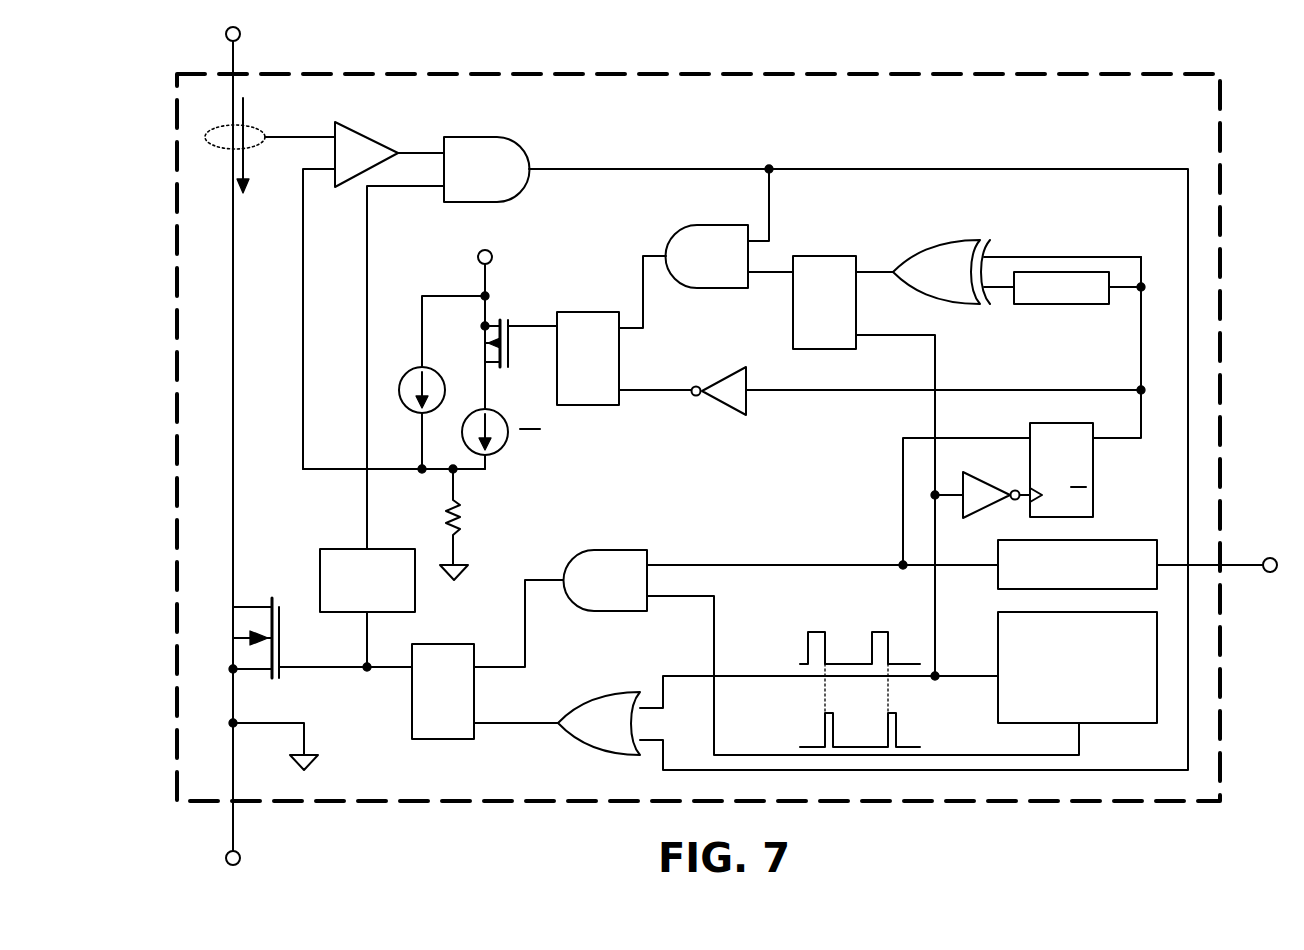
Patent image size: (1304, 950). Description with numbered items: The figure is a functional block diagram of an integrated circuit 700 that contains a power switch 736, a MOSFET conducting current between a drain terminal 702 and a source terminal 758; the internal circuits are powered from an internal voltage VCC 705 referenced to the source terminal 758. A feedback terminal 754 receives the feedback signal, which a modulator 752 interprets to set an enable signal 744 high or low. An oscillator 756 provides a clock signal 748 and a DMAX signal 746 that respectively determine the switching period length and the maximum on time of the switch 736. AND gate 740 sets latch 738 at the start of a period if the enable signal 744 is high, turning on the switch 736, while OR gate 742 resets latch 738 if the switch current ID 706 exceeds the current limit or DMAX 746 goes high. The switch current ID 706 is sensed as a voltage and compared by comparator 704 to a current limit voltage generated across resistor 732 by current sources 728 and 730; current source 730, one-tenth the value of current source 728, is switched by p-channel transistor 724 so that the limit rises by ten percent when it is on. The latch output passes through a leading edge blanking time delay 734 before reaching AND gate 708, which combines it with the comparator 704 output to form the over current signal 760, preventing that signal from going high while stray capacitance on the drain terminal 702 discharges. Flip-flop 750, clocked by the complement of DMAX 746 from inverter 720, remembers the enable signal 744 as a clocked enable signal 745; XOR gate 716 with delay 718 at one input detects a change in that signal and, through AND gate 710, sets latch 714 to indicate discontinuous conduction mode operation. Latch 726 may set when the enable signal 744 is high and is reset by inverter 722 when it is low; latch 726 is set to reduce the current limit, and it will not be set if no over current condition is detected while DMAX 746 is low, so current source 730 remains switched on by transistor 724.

The integrated circuit 700 is at (800, 63).
The drain terminal 702 is at (226, 41).
The comparator 704 is at (371, 131).
The internal voltage VCC 705 is at (478, 252).
The switch current ID 706 is at (258, 177).
The AND gate 708 is at (446, 404).
The AND gate 710 is at (729, 228).
The latch 714 is at (823, 252).
The XOR gate 716 is at (1017, 272).
The delay 718 is at (1046, 306).
The inverter 720 is at (990, 513).
The inverter 722 is at (725, 410).
The p-channel transistor 724 is at (498, 313).
The latch 726 is at (578, 311).
The current source 728 is at (418, 366).
The current source 730 is at (497, 458).
The resistor 732 is at (462, 526).
The leading edge blanking time delay 734 is at (330, 549).
The power switch 736 is at (226, 626).
The latch 738 is at (402, 707).
The AND gate 740 is at (560, 608).
The OR gate 742 is at (557, 723).
The enable signal 744 is at (743, 559).
The clocked enable signal 745 is at (1126, 386).
The DMAX signal 746 is at (785, 665).
The clock signal 748 is at (785, 748).
The flip-flop 750 is at (1093, 453).
The modulator 752 is at (1124, 538).
The feedback terminal 754 is at (1268, 574).
The oscillator 756 is at (1127, 724).
The source terminal 758 is at (226, 849).
The over current signal 760 is at (953, 164).